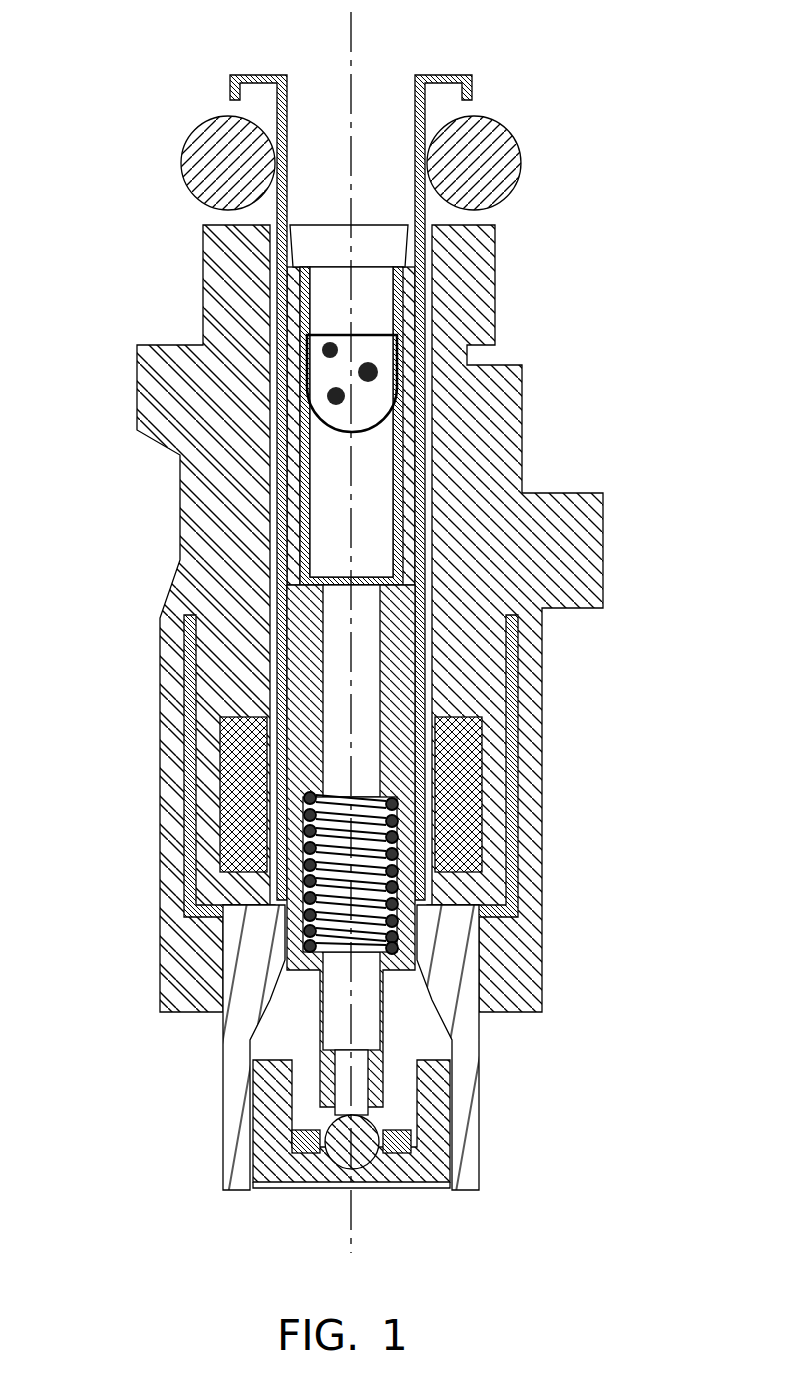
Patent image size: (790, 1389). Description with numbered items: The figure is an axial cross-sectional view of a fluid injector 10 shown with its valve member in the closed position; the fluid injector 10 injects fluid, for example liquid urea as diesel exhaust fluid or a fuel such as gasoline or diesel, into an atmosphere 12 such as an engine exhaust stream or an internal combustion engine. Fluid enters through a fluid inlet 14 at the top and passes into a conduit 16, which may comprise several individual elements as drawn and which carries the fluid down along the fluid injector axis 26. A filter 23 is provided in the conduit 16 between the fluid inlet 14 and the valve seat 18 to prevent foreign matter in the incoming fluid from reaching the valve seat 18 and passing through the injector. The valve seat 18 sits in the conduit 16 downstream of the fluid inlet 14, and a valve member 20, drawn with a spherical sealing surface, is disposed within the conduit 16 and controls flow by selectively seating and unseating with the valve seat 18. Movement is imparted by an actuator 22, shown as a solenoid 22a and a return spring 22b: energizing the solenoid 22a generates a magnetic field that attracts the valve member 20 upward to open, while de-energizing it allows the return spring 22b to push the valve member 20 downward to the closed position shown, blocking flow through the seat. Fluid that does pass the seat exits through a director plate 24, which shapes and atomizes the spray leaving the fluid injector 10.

The fluid injector 10 is at (370, 647).
The atmosphere 12 is at (333, 1291).
The fluid inlet 14 is at (307, 75).
The conduit 16 is at (398, 220).
The valve seat 18 is at (440, 1122).
The valve member 20 is at (327, 1105).
The actuator 22 is at (441, 766).
The solenoid 22a is at (492, 800).
The return spring 22b is at (313, 855).
The filter 23 is at (317, 380).
The director plate 24 is at (326, 1188).
The fluid injector axis 26 is at (352, 1240).